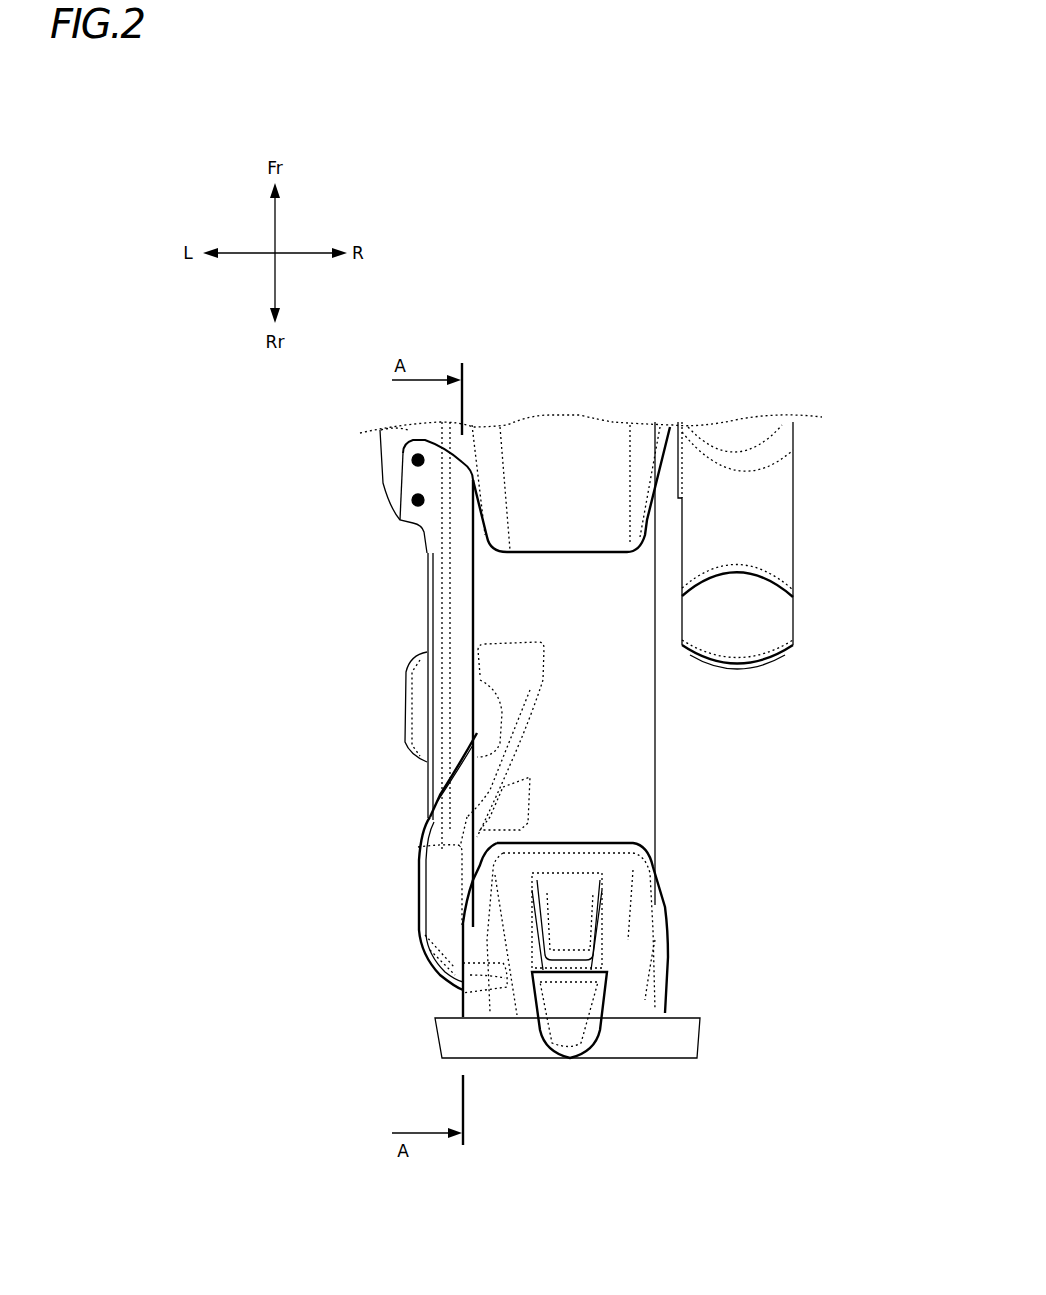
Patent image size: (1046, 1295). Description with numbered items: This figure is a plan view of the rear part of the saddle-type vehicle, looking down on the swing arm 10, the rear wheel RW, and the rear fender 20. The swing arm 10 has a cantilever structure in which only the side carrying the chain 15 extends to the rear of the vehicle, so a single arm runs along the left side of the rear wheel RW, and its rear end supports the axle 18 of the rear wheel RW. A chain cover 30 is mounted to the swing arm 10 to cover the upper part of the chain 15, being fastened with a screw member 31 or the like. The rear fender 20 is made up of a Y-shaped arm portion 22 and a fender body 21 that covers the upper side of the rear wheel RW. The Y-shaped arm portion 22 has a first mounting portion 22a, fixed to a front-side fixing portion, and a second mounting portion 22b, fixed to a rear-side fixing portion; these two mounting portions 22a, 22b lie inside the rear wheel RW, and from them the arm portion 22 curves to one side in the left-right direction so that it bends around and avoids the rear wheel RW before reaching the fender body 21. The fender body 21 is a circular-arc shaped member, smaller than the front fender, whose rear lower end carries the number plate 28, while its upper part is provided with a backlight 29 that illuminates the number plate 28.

The swing arm 10 is at (369, 488).
The chain 15 is at (440, 596).
The axle 18 is at (404, 714).
The rear fender 20 is at (676, 908).
The fender body 21 is at (640, 943).
The Y-shaped arm portion 22 is at (407, 905).
The first mounting portion 22a is at (424, 812).
The second mounting portion 22b is at (417, 848).
The number plate 28 is at (573, 1101).
The backlight 29 is at (569, 1074).
The chain cover 30 is at (427, 632).
The screw member 31 is at (412, 461).
The rear wheel RW is at (640, 752).